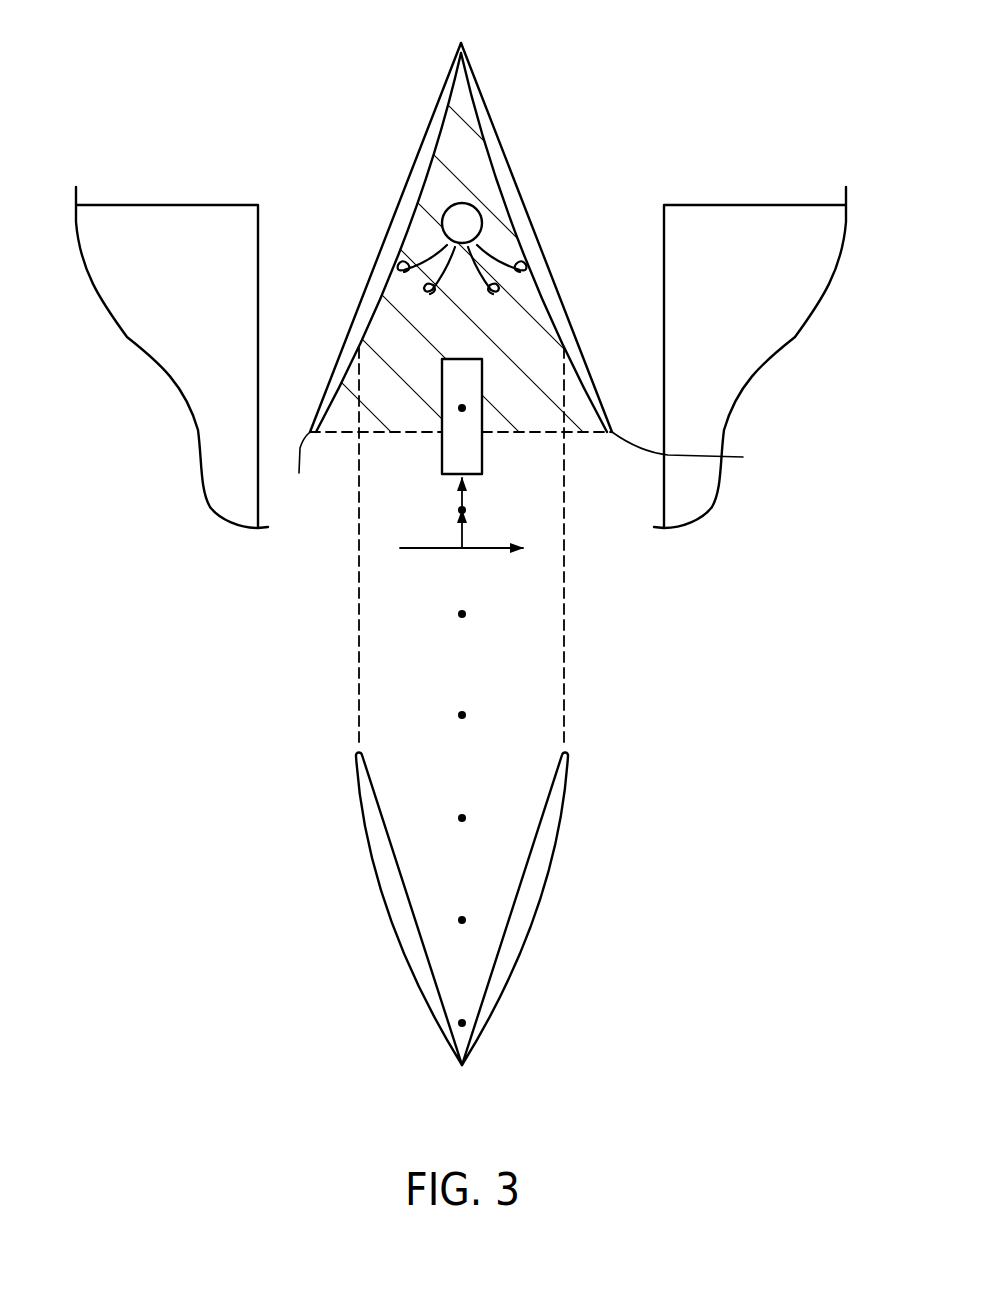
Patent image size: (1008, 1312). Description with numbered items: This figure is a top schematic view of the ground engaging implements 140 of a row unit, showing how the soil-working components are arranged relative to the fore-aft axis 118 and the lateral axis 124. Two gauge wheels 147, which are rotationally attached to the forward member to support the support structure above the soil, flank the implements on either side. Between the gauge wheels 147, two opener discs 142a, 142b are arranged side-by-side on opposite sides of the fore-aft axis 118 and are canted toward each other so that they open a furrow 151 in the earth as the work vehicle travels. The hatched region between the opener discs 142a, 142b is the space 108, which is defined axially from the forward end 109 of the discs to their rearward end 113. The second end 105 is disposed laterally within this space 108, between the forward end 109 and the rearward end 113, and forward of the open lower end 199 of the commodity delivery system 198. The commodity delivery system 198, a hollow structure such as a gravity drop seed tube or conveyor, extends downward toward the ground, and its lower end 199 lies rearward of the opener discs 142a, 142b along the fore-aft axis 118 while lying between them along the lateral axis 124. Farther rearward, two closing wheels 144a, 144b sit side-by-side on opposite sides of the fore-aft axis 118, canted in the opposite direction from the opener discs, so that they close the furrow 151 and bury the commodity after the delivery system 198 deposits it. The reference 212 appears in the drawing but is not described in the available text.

The second end 105 is at (478, 212).
The space 108 is at (396, 328).
The forward end 109 is at (463, 45).
The rearward end 113 is at (534, 469).
The fore-aft axis 118 is at (465, 508).
The lateral axis 124 is at (480, 546).
The ground engaging implements 140 is at (459, 222).
The opener disc 142a is at (388, 243).
The opener disc 142b is at (535, 243).
The closing wheel 144a is at (390, 902).
The closing wheel 144b is at (534, 902).
The gauge wheels 147 is at (172, 216).
The furrow 151 is at (400, 495).
The commodity delivery system 198 is at (458, 386).
The lower end 199 is at (448, 415).
The nose assembly 212 is at (391, 240).